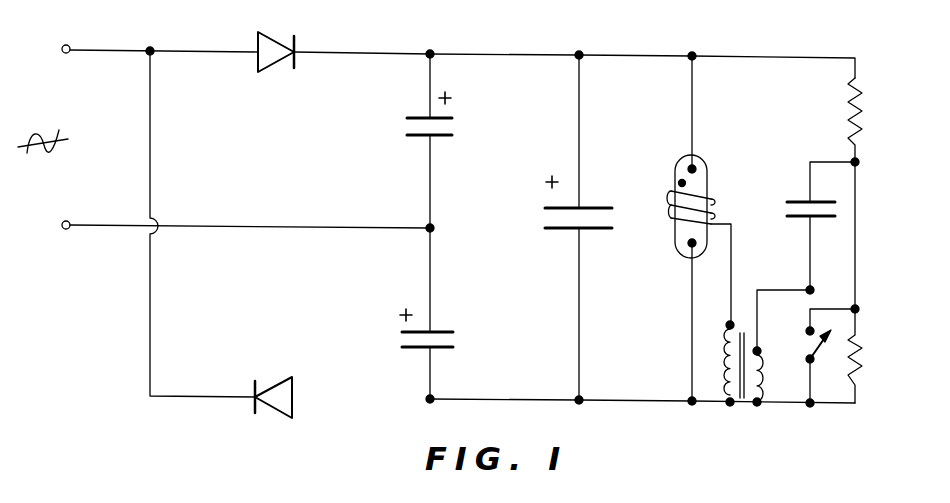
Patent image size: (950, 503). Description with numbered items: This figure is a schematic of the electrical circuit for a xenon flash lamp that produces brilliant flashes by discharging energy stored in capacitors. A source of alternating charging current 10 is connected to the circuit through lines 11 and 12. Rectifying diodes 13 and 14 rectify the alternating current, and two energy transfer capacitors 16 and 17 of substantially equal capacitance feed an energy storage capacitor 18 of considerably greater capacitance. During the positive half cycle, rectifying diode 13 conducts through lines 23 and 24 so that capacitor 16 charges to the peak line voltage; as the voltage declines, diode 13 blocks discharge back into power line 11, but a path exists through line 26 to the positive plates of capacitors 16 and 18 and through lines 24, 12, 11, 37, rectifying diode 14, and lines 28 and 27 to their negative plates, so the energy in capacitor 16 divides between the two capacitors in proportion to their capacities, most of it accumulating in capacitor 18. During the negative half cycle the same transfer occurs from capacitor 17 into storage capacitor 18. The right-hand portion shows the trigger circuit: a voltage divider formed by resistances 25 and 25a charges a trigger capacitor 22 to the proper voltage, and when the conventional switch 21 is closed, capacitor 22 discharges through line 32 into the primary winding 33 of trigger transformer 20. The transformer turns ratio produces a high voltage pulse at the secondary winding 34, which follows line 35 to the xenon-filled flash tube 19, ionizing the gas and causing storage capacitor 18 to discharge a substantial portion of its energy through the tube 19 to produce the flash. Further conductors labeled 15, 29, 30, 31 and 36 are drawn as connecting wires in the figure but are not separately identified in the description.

The source of alternating charging current 10 is at (43, 158).
The line 11 is at (133, 50).
The line 12 is at (100, 233).
The rectifying diode 13 is at (278, 36).
The rectifying diode 14 is at (272, 413).
The conductor 15 is at (793, 405).
The energy transfer capacitor 16 is at (455, 128).
The energy transfer capacitor 17 is at (450, 341).
The energy storage capacitor 18 is at (628, 231).
The xenon-filled flash tube 19 is at (680, 163).
The trigger transformer 20 is at (742, 405).
The switch 21 is at (806, 352).
The trigger capacitor 22 is at (787, 203).
The line 23 is at (365, 51).
The line 24 is at (432, 232).
The resistance 25 is at (848, 94).
The resistance 25a is at (860, 372).
The line 26 is at (517, 53).
The line 27 is at (581, 337).
The line 28 is at (486, 399).
The conductor 29 is at (637, 408).
The conductor 30 is at (653, 35).
The conductor 31 is at (693, 120).
The line 32 is at (806, 290).
The primary winding 33 is at (768, 376).
The secondary winding 34 is at (722, 347).
The line 35 is at (737, 250).
The conductor 36 is at (789, 58).
The line 37 is at (196, 399).